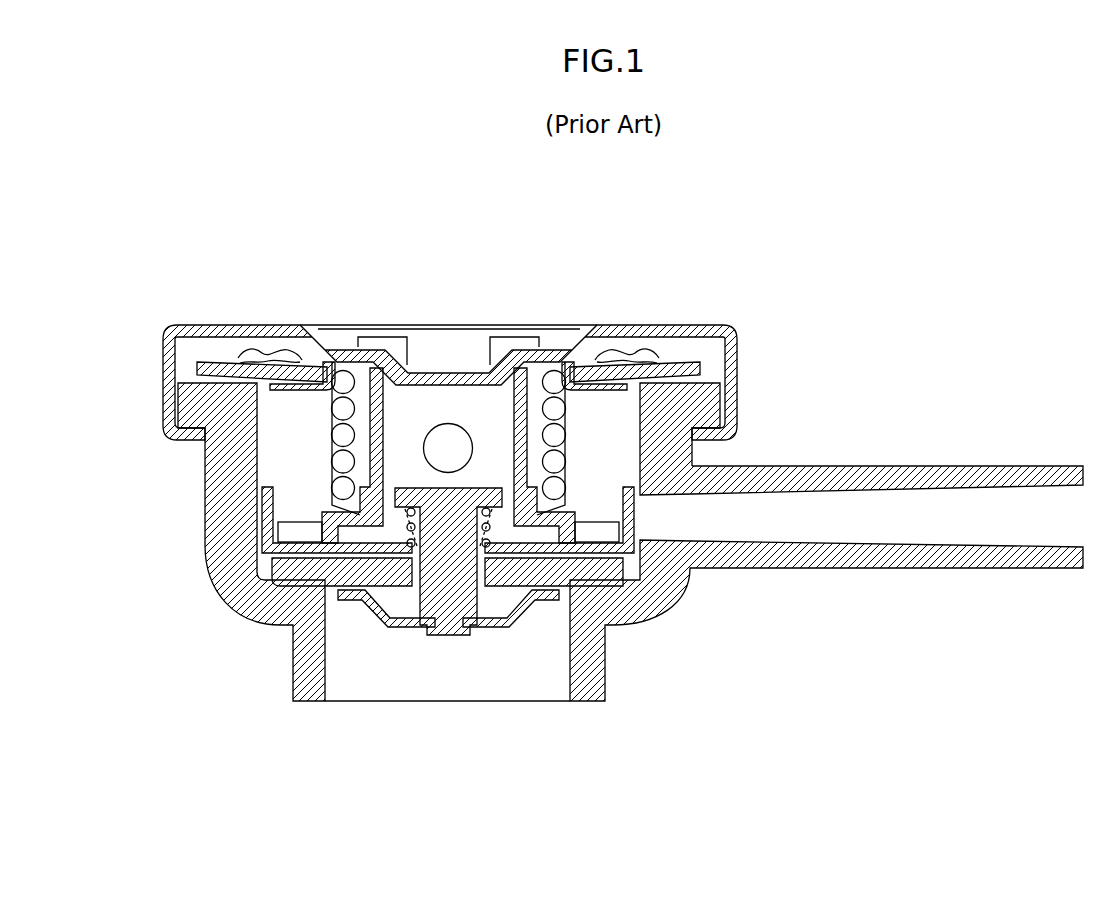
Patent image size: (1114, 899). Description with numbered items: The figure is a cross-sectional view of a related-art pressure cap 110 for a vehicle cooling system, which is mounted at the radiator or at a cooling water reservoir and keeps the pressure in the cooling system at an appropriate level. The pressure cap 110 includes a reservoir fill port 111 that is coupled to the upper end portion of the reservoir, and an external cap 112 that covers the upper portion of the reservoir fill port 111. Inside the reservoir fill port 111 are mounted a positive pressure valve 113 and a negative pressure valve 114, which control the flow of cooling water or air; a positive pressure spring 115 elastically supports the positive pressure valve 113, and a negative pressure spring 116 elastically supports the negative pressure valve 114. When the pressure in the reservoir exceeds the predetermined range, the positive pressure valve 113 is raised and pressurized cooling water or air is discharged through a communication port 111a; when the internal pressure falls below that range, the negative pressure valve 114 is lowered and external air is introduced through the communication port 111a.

The pressure cap 110 is at (808, 226).
The reservoir fill port 111 is at (228, 488).
The communication port 111a is at (910, 478).
The external cap 112 is at (237, 328).
The positive pressure valve 113 is at (630, 553).
The negative pressure valve 114 is at (493, 627).
The positive pressure spring 115 is at (551, 380).
The negative pressure spring 116 is at (412, 527).